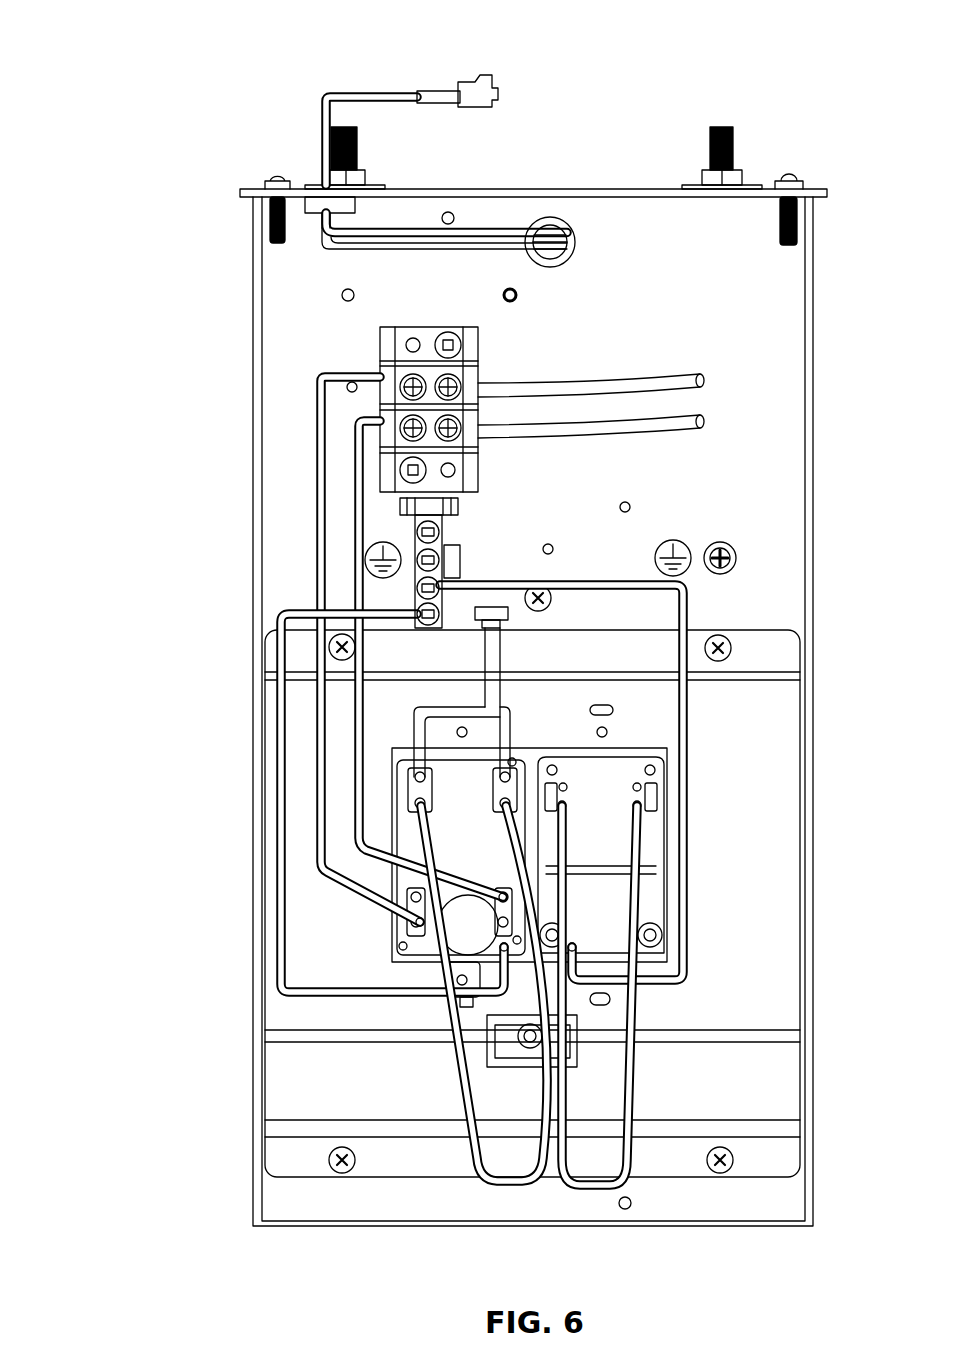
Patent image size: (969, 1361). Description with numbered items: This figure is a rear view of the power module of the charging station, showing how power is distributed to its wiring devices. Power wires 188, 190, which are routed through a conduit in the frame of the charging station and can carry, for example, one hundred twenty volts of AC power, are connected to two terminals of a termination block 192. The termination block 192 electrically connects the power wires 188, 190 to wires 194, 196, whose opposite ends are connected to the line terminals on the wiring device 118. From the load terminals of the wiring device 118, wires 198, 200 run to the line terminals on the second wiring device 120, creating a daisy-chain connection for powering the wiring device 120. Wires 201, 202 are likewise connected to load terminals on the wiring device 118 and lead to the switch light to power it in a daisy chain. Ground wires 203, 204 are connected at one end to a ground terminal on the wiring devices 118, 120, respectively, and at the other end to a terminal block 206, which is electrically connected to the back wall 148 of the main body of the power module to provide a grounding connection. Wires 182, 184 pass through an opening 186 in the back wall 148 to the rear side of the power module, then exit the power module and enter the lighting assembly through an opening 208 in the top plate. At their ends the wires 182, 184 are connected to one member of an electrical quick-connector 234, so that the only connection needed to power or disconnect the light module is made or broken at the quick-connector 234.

The wiring device 118 is at (410, 826).
The wiring device 120 is at (656, 808).
The back wall 148 is at (297, 320).
The wire 182 is at (505, 245).
The wire 184 is at (458, 232).
The opening 186 is at (578, 250).
The power wire 188 is at (680, 378).
The power wire 190 is at (686, 425).
The termination block 192 is at (478, 358).
The wire 194 is at (318, 394).
The wire 196 is at (352, 585).
The wire 198 is at (455, 1053).
The wire 200 is at (632, 1112).
The wire 201 is at (410, 735).
The wire 202 is at (500, 706).
The ground wire 203 is at (275, 688).
The ground wire 204 is at (685, 745).
The terminal block 206 is at (440, 540).
The opening 208 is at (312, 222).
The electrical quick-connector 234 is at (499, 85).